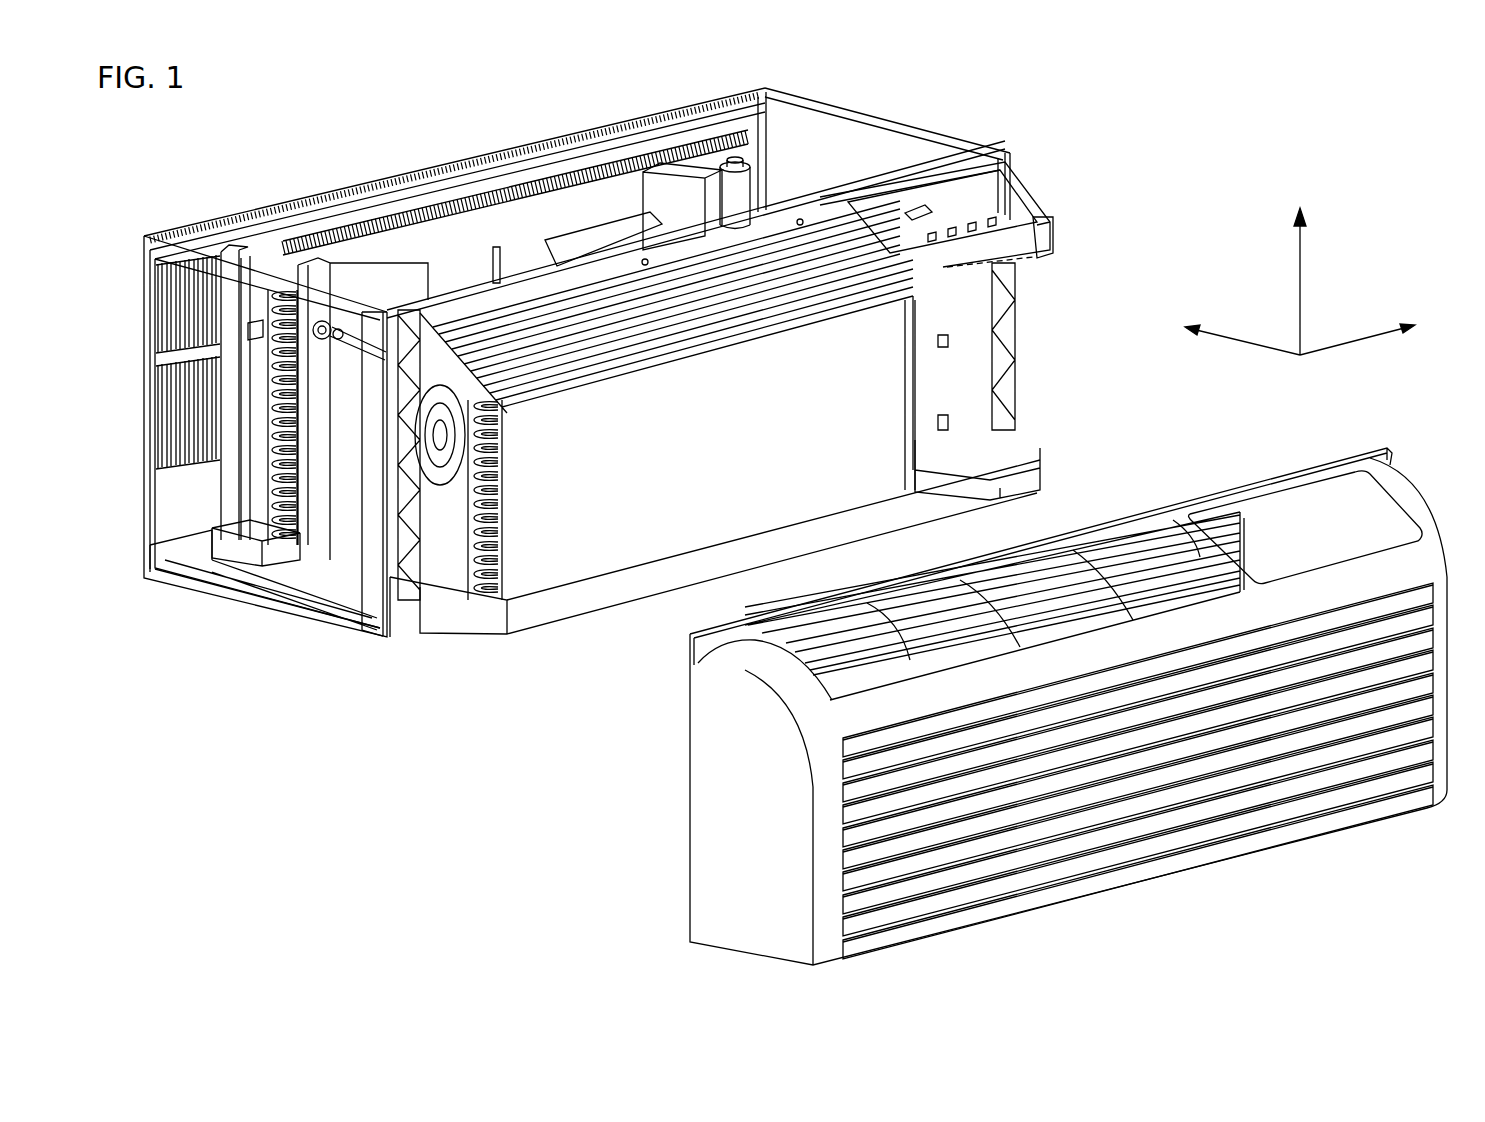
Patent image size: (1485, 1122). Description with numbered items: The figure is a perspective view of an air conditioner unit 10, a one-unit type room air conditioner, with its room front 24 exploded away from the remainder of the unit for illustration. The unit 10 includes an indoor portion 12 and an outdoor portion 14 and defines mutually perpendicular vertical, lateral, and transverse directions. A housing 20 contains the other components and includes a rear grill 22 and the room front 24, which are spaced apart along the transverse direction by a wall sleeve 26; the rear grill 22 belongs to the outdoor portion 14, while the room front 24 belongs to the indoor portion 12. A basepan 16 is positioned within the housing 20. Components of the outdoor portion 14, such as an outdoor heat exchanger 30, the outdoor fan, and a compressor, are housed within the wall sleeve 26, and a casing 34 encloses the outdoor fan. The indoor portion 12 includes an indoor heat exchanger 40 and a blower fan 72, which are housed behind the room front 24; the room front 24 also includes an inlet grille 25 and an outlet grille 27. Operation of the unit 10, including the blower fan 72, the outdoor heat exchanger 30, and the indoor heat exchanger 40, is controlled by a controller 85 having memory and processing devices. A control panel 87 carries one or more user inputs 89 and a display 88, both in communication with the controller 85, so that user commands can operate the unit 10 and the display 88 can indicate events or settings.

The air conditioner unit 10 is at (805, 512).
The indoor portion 12 is at (760, 425).
The outdoor portion 14 is at (619, 400).
The basepan 16 is at (323, 583).
The housing 20 is at (995, 130).
The rear grill 22 is at (540, 137).
The room front 24 is at (1044, 703).
The inlet grille 25 is at (1152, 828).
The wall sleeve 26 is at (840, 137).
The outlet grille 27 is at (833, 653).
The outdoor heat exchanger 30 is at (245, 540).
The casing 34 is at (455, 245).
The indoor heat exchanger 40 is at (547, 557).
The blower fan 72 is at (450, 467).
The controller 85 is at (976, 188).
The control panel 87 is at (1017, 217).
The display 88 is at (913, 210).
The user inputs 89 is at (992, 218).